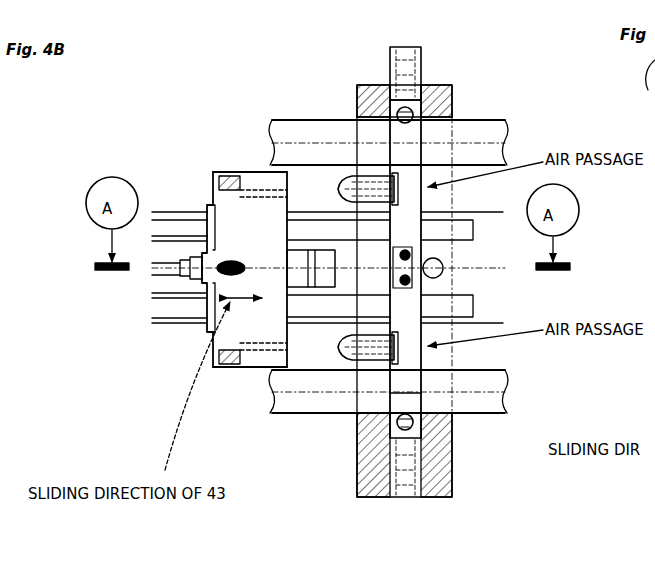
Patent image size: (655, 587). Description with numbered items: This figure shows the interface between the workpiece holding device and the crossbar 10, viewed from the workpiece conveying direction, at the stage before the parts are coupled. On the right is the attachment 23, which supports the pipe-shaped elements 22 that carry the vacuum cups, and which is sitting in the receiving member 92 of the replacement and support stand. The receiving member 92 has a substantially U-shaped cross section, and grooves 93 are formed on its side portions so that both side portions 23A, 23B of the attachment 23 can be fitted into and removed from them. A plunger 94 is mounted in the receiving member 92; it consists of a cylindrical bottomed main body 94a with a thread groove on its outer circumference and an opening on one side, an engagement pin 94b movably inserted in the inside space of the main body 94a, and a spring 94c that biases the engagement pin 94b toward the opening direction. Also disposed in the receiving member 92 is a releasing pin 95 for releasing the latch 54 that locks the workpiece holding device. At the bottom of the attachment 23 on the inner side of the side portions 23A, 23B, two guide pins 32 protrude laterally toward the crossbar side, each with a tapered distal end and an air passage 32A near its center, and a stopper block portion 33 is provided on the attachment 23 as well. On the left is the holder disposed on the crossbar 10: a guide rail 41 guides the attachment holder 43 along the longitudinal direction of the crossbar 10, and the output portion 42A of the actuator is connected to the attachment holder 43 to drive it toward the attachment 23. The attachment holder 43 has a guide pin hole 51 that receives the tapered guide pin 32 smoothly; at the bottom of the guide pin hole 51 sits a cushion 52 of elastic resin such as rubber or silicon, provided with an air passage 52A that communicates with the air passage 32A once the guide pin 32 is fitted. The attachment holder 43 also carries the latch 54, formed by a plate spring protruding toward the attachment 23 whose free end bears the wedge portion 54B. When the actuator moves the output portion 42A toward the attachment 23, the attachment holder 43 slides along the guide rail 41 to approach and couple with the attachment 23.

The crossbar 10 is at (162, 326).
The pipe-shaped element 22 is at (506, 120).
The attachment 23 is at (406, 228).
The side portion of the attachment 23A is at (428, 112).
The side portion of the attachment 23B is at (418, 400).
The guide pin 32 is at (336, 178).
The air passage 32A is at (374, 174).
The stopper block portion 33 is at (393, 290).
The guide rail 41 is at (182, 212).
The output portion 42A is at (160, 260).
The attachment holder 43 is at (229, 171).
The guide pin hole 51 is at (262, 171).
The cushion 52 is at (217, 176).
The air passage 52A is at (224, 178).
The latch 54 is at (322, 292).
The wedge portion 54B is at (322, 249).
The receiving member 92 is at (356, 92).
The groove 93 is at (383, 90).
The plunger 94 is at (423, 48).
The main body 94a is at (388, 60).
The engagement pin 94b is at (412, 126).
The spring 94c is at (420, 65).
The releasing pin 95 is at (446, 272).